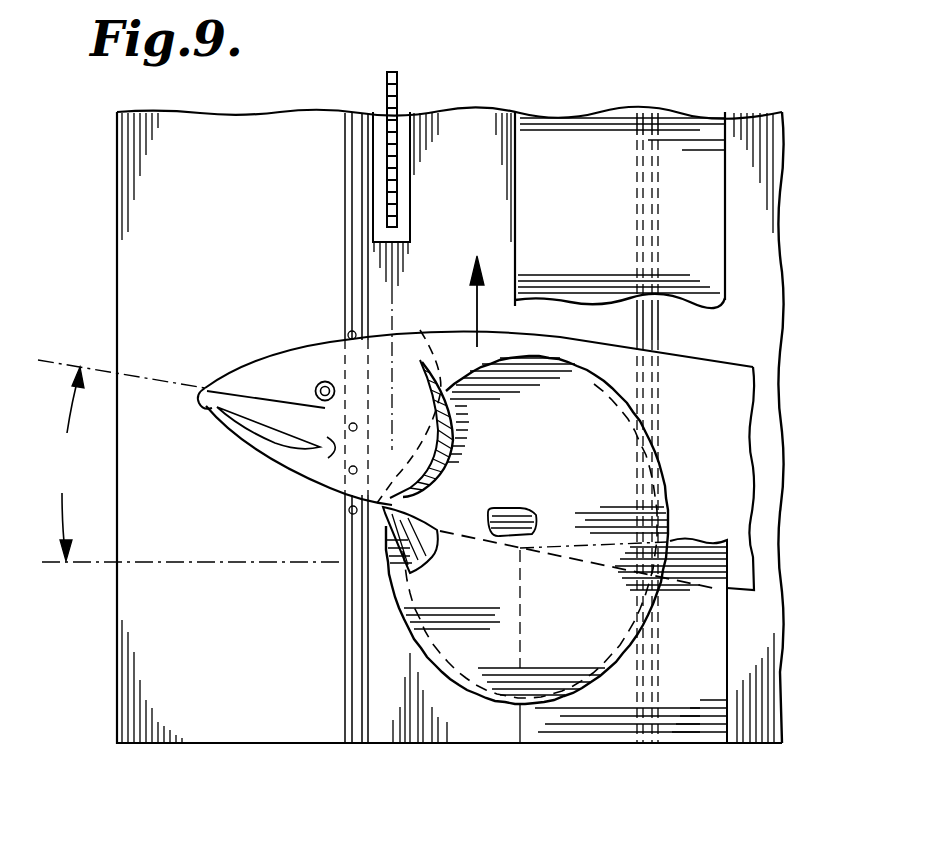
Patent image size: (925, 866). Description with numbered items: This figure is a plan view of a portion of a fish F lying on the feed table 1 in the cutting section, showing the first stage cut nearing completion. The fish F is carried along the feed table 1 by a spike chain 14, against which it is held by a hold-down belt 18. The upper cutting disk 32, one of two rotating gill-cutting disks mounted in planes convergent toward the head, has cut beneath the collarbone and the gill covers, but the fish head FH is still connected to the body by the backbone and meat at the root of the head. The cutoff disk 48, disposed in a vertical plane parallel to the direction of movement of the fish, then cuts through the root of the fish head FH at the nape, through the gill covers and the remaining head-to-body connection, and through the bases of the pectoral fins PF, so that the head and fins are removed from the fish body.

The feed table 1 is at (143, 258).
The spike chain 14 is at (356, 386).
The hold-down belt 18 is at (673, 147).
The cutoff disk 48 is at (398, 95).
The upper cutting disk 32 is at (583, 653).
The fish F is at (720, 380).
The fish head FH is at (268, 372).
The pectoral fin PF is at (380, 528).